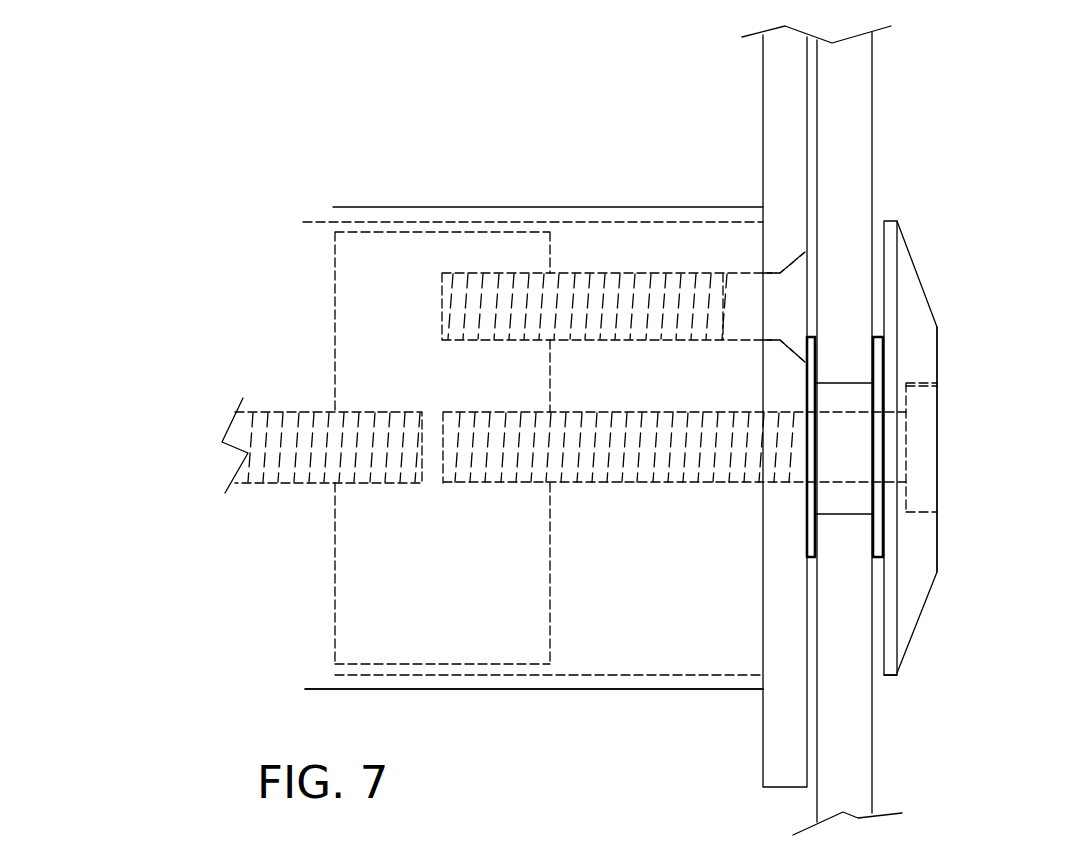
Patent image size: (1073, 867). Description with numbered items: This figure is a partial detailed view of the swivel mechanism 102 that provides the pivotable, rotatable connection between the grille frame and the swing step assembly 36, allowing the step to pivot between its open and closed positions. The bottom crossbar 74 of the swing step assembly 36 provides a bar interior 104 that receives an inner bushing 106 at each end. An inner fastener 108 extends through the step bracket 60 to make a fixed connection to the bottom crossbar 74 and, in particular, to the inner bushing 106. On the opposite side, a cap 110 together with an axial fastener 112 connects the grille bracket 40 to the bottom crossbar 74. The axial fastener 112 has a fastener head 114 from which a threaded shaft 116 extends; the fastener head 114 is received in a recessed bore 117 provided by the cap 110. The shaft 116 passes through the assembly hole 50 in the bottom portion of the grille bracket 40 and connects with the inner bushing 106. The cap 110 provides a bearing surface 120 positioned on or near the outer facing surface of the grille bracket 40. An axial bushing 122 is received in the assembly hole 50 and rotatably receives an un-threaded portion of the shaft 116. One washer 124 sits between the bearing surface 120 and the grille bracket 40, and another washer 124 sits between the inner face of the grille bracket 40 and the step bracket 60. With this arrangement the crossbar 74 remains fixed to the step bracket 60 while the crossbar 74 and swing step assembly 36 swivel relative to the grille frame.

The swing step assembly 36 is at (666, 158).
The grille bracket 40 is at (876, 65).
The assembly hole 50 is at (845, 383).
The step bracket 60 is at (771, 789).
The bottom crossbar 74 is at (691, 690).
The swivel mechanism 102 is at (884, 208).
The bar interior 104 is at (650, 673).
The inner bushing 106 is at (540, 588).
The inner fastener 108 is at (627, 341).
The cap 110 is at (890, 221).
The axial fastener 112 is at (950, 455).
The fastener head 114 is at (920, 497).
The threaded shaft 116 is at (693, 486).
The recessed bore 117 is at (926, 378).
The bearing surface 120 is at (878, 678).
The axial bushing 122 is at (842, 447).
The washer 124 is at (813, 337).